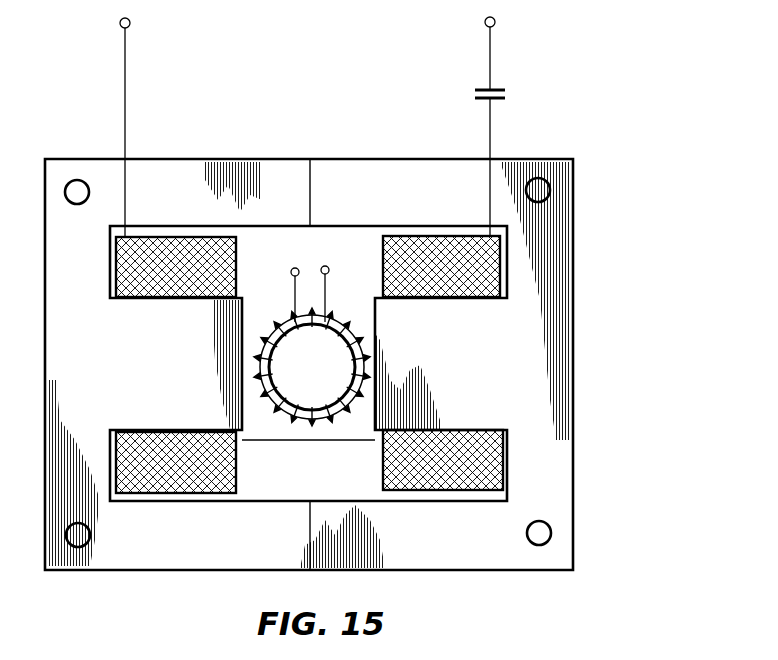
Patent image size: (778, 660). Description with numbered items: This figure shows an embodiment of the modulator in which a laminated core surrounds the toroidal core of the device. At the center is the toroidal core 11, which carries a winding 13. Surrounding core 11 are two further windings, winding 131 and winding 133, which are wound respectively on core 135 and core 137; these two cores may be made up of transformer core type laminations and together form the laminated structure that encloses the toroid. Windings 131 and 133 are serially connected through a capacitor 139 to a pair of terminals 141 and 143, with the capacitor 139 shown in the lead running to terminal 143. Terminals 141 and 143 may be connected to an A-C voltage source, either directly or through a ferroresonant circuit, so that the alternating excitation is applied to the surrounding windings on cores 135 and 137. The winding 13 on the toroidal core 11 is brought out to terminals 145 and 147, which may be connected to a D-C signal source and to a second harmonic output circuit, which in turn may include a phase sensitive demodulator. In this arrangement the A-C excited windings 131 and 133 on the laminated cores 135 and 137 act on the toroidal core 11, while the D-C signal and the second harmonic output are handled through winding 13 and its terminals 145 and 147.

The core 11 is at (289, 410).
The winding 13 is at (270, 367).
The winding 131 is at (236, 279).
The winding 133 is at (382, 278).
The core 135 is at (151, 159).
The core 137 is at (343, 159).
The capacitor 139 is at (486, 88).
The terminal 141 is at (120, 21).
The terminal 143 is at (485, 22).
The terminal 145 is at (294, 267).
The terminal 147 is at (327, 265).